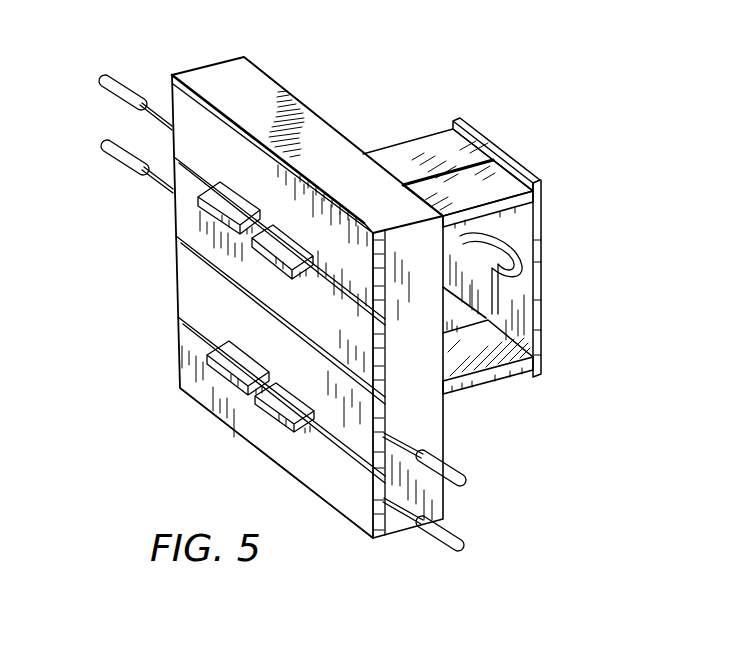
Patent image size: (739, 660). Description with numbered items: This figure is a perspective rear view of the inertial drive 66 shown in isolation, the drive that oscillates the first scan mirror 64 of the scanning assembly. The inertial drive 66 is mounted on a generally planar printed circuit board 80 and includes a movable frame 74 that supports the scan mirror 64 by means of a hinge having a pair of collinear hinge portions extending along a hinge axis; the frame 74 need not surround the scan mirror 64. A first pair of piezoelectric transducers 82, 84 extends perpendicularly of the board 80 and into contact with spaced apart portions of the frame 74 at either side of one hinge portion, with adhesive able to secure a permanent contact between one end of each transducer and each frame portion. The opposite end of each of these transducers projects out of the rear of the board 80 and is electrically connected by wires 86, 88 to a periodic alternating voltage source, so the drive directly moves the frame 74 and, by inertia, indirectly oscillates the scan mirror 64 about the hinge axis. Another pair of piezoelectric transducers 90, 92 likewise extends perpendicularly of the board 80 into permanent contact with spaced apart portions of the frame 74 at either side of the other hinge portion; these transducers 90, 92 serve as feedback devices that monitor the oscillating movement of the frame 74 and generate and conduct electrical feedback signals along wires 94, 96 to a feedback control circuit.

The first scan mirror 64 is at (520, 366).
The inertial drive 66 is at (492, 116).
The movable frame 74 is at (517, 243).
The printed circuit board 80 is at (175, 76).
The piezoelectric transducer 82 is at (494, 189).
The piezoelectric transducer 84 is at (416, 150).
The wire 86 is at (130, 88).
The wire 88 is at (119, 145).
The piezoelectric transducer 90 is at (526, 376).
The piezoelectric transducer 92 is at (448, 325).
The wire 94 is at (467, 481).
The wire 96 is at (461, 547).